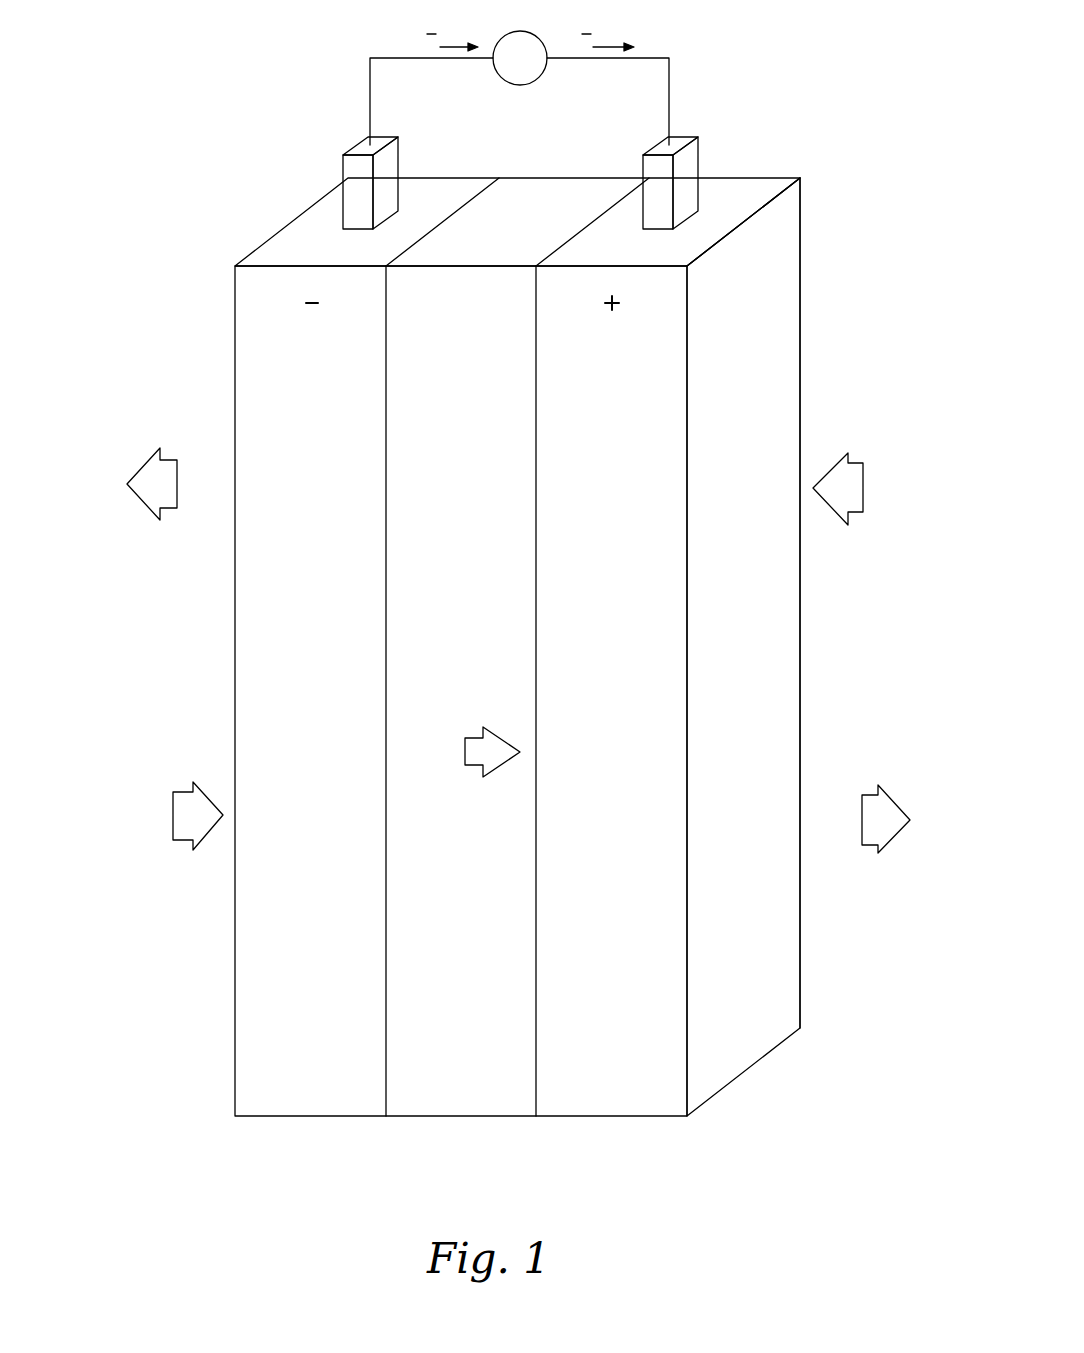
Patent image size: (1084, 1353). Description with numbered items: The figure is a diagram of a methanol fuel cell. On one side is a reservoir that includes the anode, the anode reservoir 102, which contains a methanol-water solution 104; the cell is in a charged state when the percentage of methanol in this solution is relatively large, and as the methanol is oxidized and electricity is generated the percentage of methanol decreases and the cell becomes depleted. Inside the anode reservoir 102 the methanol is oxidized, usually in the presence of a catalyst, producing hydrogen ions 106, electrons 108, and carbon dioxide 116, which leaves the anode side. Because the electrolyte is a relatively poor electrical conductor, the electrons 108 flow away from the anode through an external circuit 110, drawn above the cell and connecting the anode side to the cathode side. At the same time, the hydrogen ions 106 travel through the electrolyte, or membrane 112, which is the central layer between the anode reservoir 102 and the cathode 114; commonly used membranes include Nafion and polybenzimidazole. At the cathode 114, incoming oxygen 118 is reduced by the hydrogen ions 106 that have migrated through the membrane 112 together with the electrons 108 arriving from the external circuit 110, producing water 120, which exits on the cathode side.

The anode reservoir 102 is at (290, 247).
The methanol-water solution 104 is at (128, 793).
The hydrogen ions 106 is at (427, 752).
The electrons 108 is at (412, 42).
The external circuit 110 is at (644, 58).
The membrane 112 is at (417, 352).
The cathode 114 is at (768, 188).
The carbon dioxide 116 is at (203, 470).
The oxygen 118 is at (888, 470).
The water 120 is at (830, 808).